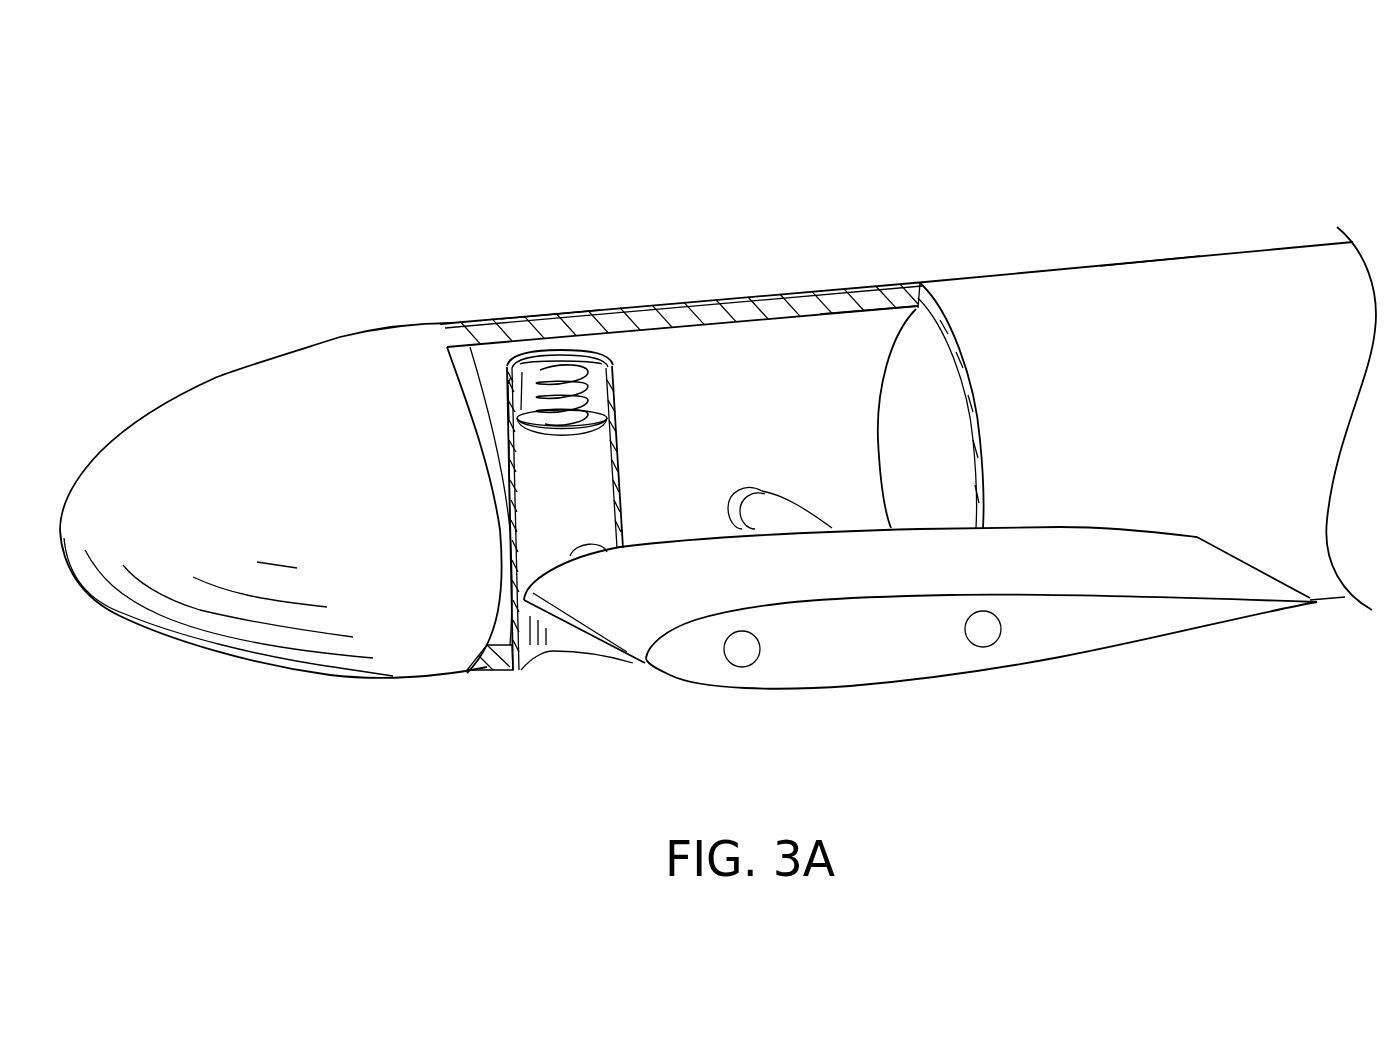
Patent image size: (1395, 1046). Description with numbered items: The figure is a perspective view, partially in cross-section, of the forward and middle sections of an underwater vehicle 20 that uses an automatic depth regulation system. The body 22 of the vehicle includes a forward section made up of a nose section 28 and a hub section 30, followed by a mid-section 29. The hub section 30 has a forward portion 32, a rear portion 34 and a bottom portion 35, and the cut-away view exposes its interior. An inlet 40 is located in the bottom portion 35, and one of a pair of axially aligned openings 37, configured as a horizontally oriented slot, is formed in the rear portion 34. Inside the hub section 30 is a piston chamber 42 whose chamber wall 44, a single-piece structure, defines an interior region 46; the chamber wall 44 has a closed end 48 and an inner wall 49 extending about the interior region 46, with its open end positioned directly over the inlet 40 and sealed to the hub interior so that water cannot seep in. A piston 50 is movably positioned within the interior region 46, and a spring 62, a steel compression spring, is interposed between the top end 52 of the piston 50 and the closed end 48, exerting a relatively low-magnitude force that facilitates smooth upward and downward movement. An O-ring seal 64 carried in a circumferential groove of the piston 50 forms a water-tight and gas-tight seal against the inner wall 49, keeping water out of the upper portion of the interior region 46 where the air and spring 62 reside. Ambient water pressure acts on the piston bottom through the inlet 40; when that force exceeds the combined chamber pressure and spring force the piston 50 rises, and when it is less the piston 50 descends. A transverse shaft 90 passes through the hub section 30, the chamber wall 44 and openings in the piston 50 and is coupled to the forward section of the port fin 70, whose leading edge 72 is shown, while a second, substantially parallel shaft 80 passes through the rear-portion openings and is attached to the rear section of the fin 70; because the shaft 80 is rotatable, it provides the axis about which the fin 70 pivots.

The underwater vehicle 20 is at (856, 108).
The body 22 is at (903, 282).
The nose section 28 is at (222, 373).
The mid-section 29 is at (1217, 250).
The hub section 30 is at (783, 297).
The forward portion 32 is at (545, 317).
The rear portion 34 is at (875, 282).
The bottom portion 35 is at (490, 666).
The axially aligned opening 37 is at (737, 495).
The inlet 40 is at (548, 665).
The piston chamber 42 is at (520, 398).
The chamber wall 44 is at (530, 526).
The interior region 46 is at (597, 388).
The closed end 48 is at (600, 363).
The inner wall 49 is at (510, 377).
The piston 50 is at (508, 557).
The top end 52 is at (597, 413).
The spring 62 is at (563, 377).
The O-ring seal 64 is at (510, 454).
The fin 70 is at (907, 680).
The leading edge 72 is at (640, 662).
The shaft 80 is at (795, 520).
The shaft 90 is at (583, 553).